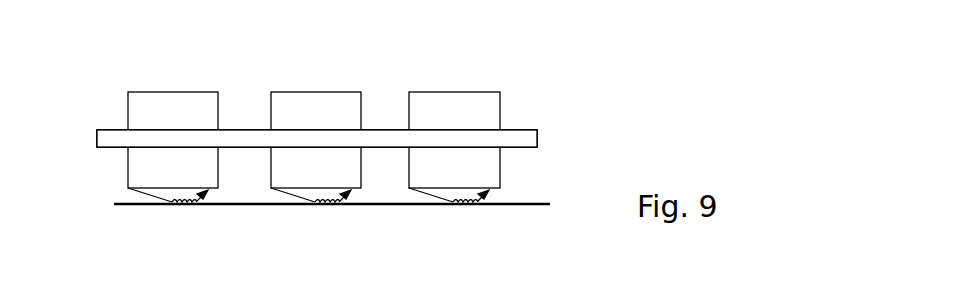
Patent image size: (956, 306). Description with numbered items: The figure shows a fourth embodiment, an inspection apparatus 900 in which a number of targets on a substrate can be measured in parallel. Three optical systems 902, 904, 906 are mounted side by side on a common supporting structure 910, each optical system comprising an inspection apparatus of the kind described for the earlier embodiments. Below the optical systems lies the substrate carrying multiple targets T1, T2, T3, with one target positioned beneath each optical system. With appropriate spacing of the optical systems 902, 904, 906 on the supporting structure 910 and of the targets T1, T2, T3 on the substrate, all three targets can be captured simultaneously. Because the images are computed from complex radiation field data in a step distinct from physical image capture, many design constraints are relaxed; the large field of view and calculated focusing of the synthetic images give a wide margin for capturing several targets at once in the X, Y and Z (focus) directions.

The inspection apparatus 900 is at (168, 47).
The optical system 902 is at (172, 92).
The optical system 904 is at (310, 92).
The optical system 906 is at (452, 92).
The supporting structure 910 is at (520, 130).
The target T1 is at (207, 194).
The target T2 is at (350, 194).
The target T3 is at (488, 194).